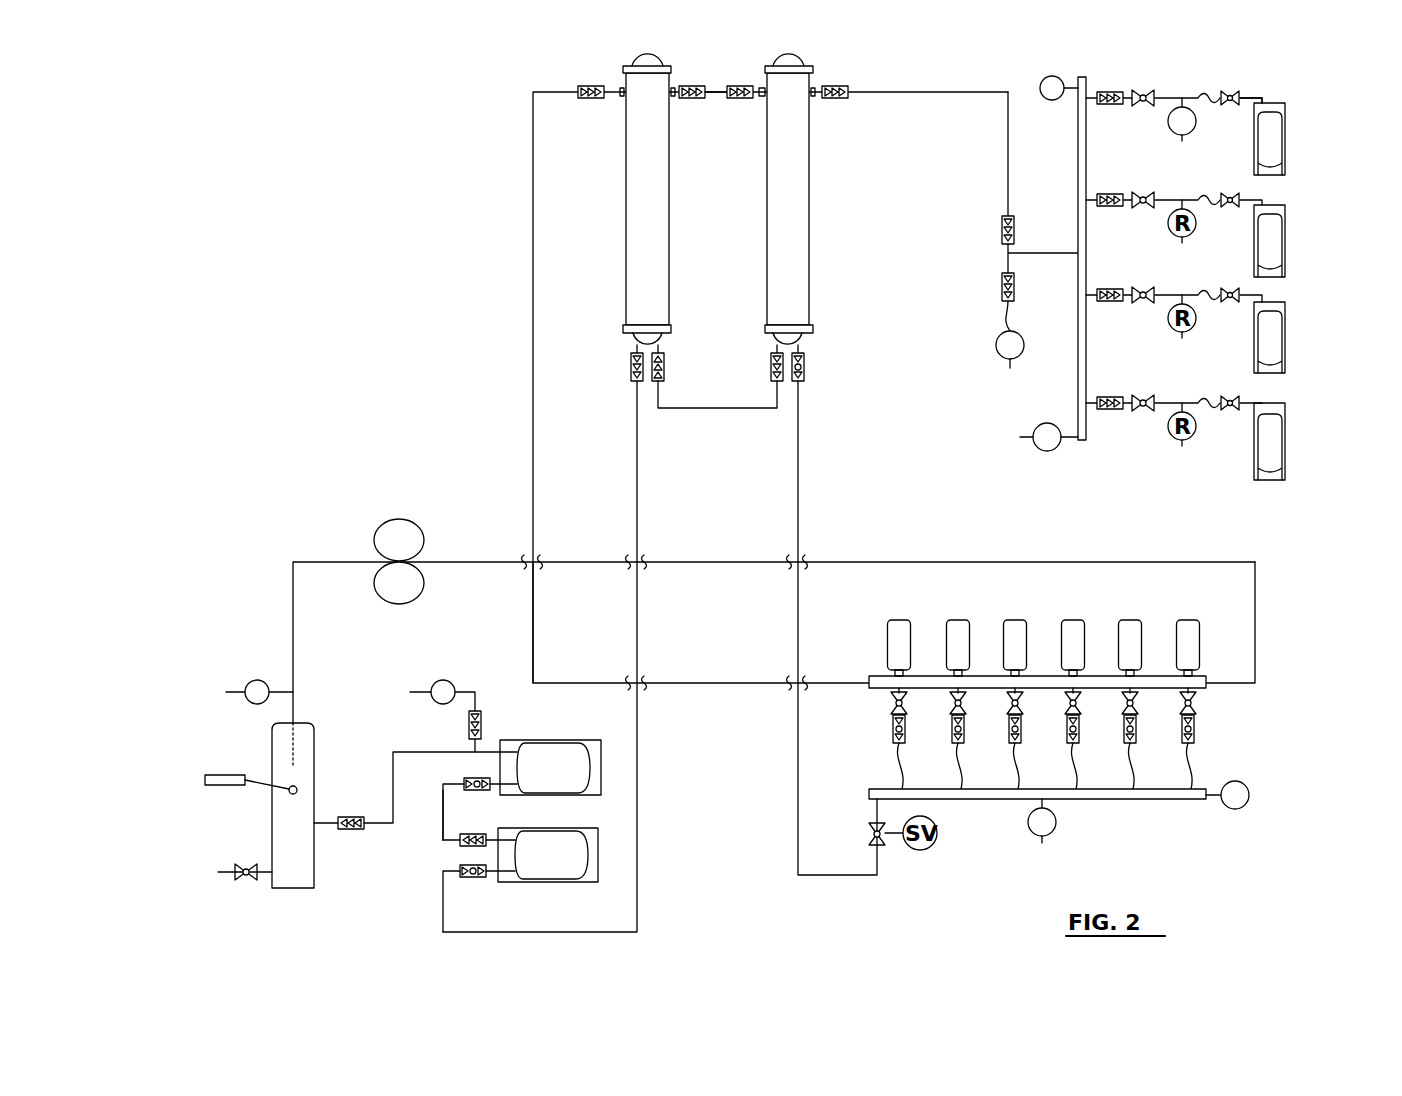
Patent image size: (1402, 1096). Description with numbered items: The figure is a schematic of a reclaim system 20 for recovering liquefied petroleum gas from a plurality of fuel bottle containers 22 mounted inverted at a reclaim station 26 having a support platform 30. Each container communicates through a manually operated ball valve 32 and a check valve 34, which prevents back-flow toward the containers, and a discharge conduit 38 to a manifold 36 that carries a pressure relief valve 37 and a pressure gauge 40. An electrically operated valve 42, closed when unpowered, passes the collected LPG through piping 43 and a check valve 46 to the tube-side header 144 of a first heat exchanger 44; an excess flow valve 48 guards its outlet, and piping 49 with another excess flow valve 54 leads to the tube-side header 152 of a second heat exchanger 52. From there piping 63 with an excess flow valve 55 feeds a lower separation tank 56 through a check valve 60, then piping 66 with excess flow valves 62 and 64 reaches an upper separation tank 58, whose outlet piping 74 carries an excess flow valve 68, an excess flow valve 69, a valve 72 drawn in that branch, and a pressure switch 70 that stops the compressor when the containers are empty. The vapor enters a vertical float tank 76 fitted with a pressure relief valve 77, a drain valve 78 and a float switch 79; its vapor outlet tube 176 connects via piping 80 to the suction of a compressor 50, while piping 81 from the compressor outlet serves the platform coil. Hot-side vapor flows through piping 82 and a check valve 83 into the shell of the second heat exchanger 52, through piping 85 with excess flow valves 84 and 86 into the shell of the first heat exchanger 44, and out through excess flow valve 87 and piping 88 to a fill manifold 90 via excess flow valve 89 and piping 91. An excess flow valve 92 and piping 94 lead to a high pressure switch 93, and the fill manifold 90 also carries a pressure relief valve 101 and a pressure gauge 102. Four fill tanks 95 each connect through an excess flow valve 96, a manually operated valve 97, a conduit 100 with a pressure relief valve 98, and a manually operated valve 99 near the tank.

The reclaim system 20 is at (336, 183).
The fuel bottle containers 22 is at (1180, 636).
The reclaim station 26 is at (1296, 668).
The support platform 30 is at (872, 690).
The valves 32 is at (1197, 701).
The check valves 34 is at (1196, 730).
The manifold 36 is at (1140, 800).
The pressure relief valve 37 is at (1036, 840).
The discharge conduit 38 is at (1195, 762).
The pressure gauge 40 is at (1248, 802).
The electrically operated valve 42 is at (880, 850).
The piping 43 is at (802, 440).
The first heat exchanger 44 is at (809, 192).
The check valve 46 is at (806, 370).
The excess flow valve 48 is at (770, 370).
The piping 49 is at (712, 408).
The compressor 50 is at (386, 520).
The second heat exchanger 52 is at (669, 240).
The excess flow valve 54 is at (665, 368).
The excess flow valve 55 is at (631, 372).
The lower separation tank 56 is at (582, 882).
The upper separation tank 58 is at (582, 740).
The check valve 60 is at (478, 880).
The excess flow valve 62 is at (460, 843).
The piping 63 is at (640, 495).
The excess flow valve 64 is at (468, 778).
The piping 66 is at (447, 805).
The excess flow valve 68 is at (348, 830).
The excess flow valve 69 is at (483, 716).
The pressure switch 70 is at (420, 688).
The check valve 72 is at (469, 708).
The piping 74 is at (348, 815).
The vertical float tank 76 is at (245, 816).
The pressure relief valve 77 is at (256, 680).
The drain valve 78 is at (238, 880).
The float switch 79 is at (212, 775).
The piping 80 is at (318, 560).
The piping 81 is at (845, 560).
The piping 82 is at (533, 192).
The check valve 83 is at (587, 86).
The excess flow valve 84 is at (697, 100).
The piping 85 is at (718, 90).
The excess flow valve 86 is at (742, 100).
The excess flow valve 87 is at (848, 90).
The piping 88 is at (928, 96).
The excess flow valve 89 is at (1002, 228).
The fill manifold 90 is at (1078, 160).
The piping 91 is at (1042, 253).
The excess flow valve 92 is at (1002, 290).
The pressure switch 93 is at (1000, 358).
The piping 94 is at (1012, 318).
The fill tanks 95 is at (1286, 128).
The excess flow valve 96 is at (1112, 91).
The manually operated valve 97 is at (1148, 90).
The pressure relief valve 98 is at (1172, 131).
The manually operated valve 99 is at (1262, 88).
The conduit 100 is at (1215, 92).
The pressure relief valve 101 is at (1055, 450).
The pressure gauge 102 is at (1044, 79).
The tube-side header 144 is at (803, 340).
The tube-side header 152 is at (660, 325).
The vapor outlet tube 176 is at (271, 745).